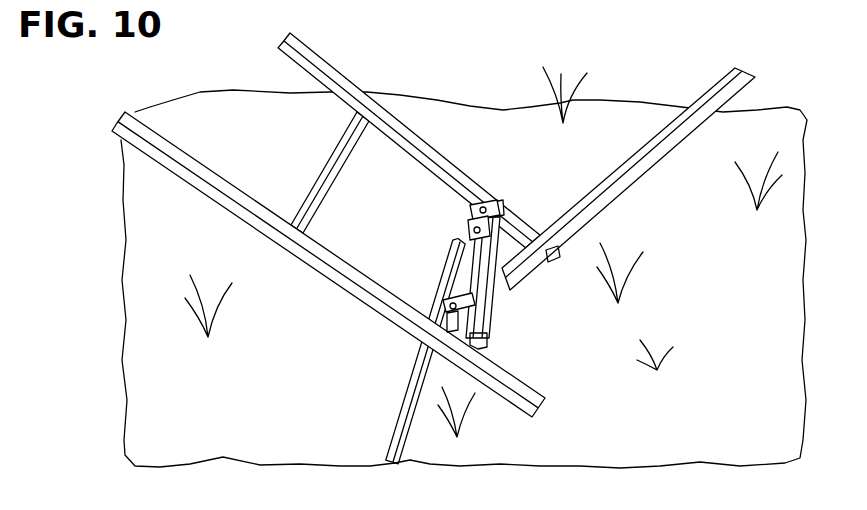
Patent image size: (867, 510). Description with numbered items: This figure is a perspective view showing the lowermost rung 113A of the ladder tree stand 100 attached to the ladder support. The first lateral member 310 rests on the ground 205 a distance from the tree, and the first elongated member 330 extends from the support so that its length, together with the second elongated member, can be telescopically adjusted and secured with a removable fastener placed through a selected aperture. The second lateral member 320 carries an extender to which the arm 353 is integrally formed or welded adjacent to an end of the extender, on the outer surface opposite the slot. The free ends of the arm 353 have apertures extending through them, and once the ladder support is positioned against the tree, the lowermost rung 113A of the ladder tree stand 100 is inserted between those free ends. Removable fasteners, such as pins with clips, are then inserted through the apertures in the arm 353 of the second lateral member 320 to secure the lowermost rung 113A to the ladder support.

The ladder tree stand 100 is at (427, 160).
The arm 353 is at (487, 204).
The first elongated member 330 is at (637, 172).
The second lateral member 320 is at (493, 303).
The ground 205 is at (751, 352).
The lowermost rung 113A is at (482, 327).
The first lateral member 310 is at (405, 424).